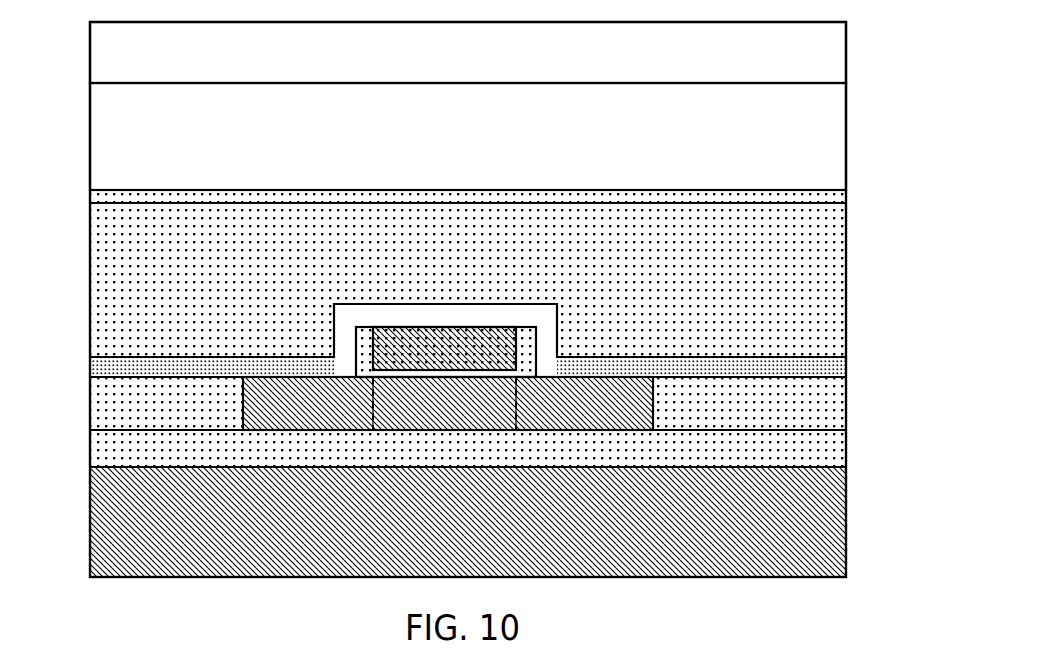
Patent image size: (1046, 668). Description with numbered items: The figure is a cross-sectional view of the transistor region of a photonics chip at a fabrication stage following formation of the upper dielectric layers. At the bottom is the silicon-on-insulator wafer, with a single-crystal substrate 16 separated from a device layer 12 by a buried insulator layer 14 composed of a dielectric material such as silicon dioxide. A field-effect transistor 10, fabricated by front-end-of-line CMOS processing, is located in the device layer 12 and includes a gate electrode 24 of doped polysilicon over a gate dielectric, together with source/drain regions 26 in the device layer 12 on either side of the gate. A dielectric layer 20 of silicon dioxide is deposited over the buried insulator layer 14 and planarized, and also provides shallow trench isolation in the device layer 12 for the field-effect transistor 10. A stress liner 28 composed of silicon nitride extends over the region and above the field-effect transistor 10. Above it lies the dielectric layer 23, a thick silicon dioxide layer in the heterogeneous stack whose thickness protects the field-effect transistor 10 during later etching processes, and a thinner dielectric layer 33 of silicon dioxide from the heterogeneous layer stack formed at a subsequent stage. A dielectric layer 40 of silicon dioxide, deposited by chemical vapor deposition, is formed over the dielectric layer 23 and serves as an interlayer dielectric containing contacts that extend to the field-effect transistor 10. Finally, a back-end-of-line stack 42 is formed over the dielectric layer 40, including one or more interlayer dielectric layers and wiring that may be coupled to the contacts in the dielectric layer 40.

The field-effect transistor 10 is at (75, 166).
The device layer 12 is at (660, 395).
The buried insulator layer 14 is at (805, 455).
The substrate 16 is at (808, 550).
The dielectric layer 20 is at (143, 400).
The dielectric layer 23 is at (120, 276).
The gate electrode 24 is at (418, 354).
The source/drain regions 26 is at (272, 412).
The stress liner 28 is at (700, 367).
The dielectric layer 33 is at (810, 200).
The dielectric layer 40 is at (823, 141).
The back-end-of-line stack 42 is at (823, 48).